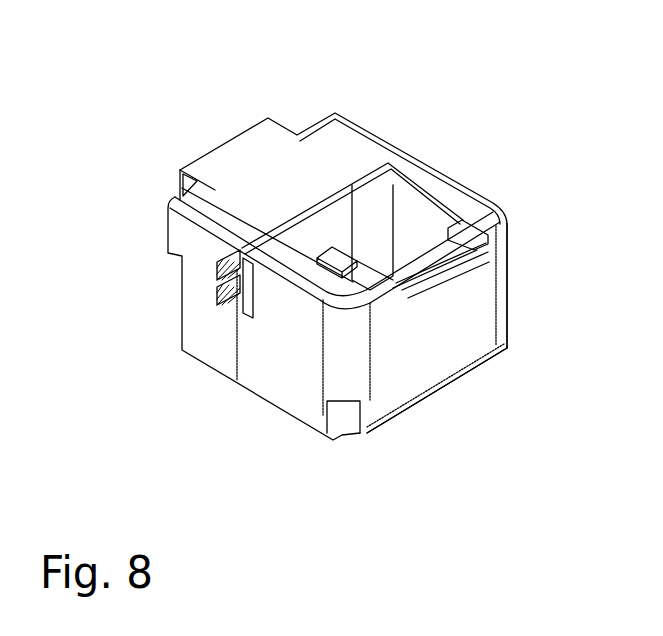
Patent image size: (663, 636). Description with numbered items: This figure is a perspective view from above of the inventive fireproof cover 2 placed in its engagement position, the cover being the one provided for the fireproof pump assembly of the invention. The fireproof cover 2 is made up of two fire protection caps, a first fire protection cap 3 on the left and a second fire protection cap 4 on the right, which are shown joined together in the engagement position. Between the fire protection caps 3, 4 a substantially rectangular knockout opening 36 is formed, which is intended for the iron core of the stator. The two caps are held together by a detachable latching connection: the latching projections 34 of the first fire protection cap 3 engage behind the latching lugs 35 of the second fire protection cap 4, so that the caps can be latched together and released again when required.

The fireproof cover 2 is at (464, 106).
The first fire protection cap 3 is at (197, 309).
The second fire protection cap 4 is at (473, 315).
The knockout opening 36 is at (375, 235).
The latching projections 34 is at (238, 328).
The latching lugs 35 is at (228, 290).